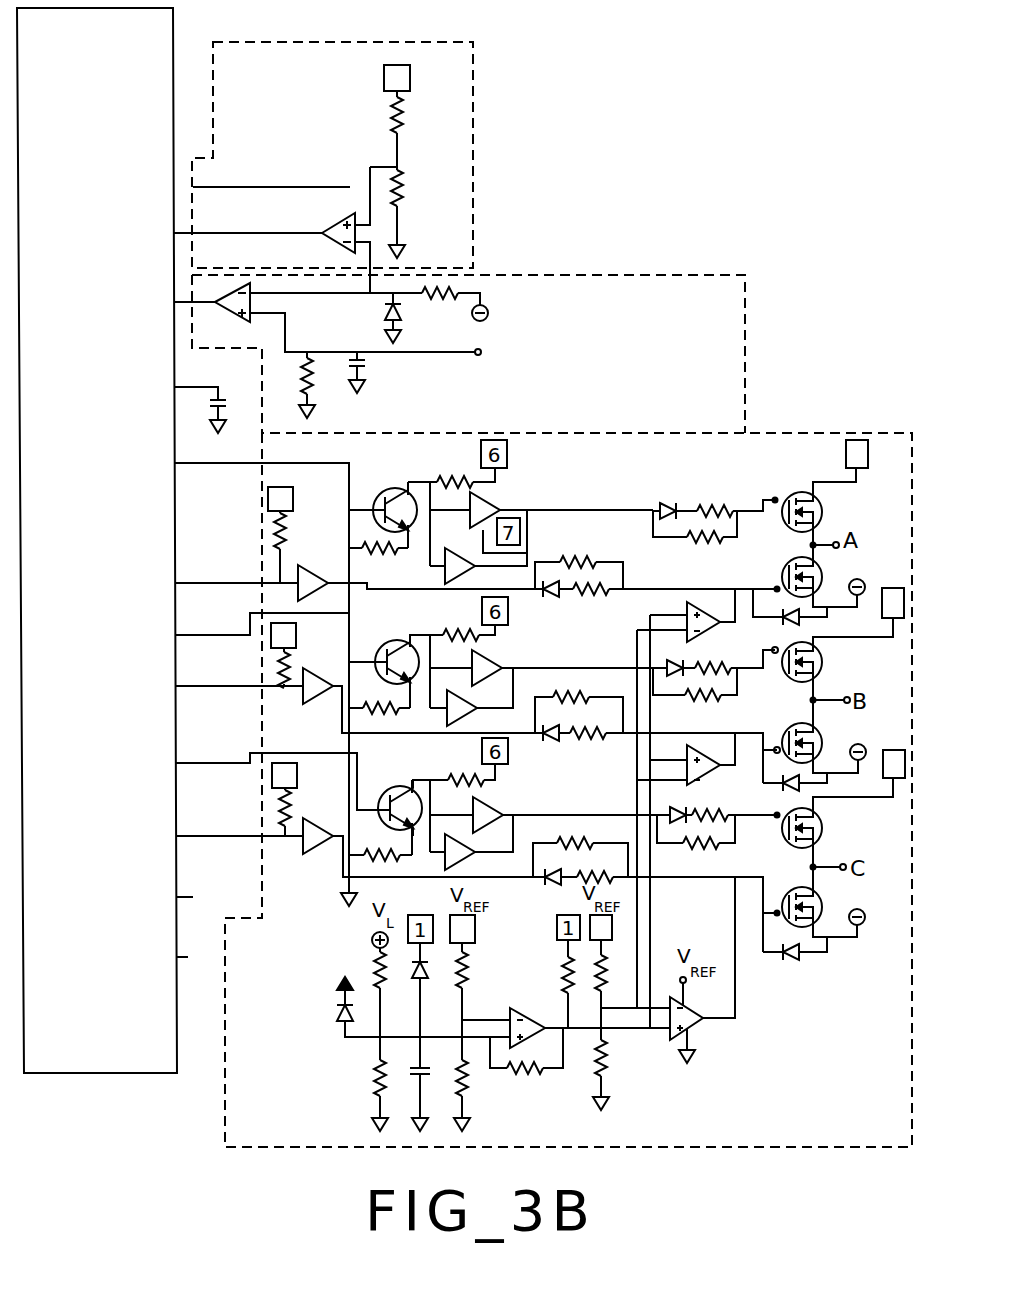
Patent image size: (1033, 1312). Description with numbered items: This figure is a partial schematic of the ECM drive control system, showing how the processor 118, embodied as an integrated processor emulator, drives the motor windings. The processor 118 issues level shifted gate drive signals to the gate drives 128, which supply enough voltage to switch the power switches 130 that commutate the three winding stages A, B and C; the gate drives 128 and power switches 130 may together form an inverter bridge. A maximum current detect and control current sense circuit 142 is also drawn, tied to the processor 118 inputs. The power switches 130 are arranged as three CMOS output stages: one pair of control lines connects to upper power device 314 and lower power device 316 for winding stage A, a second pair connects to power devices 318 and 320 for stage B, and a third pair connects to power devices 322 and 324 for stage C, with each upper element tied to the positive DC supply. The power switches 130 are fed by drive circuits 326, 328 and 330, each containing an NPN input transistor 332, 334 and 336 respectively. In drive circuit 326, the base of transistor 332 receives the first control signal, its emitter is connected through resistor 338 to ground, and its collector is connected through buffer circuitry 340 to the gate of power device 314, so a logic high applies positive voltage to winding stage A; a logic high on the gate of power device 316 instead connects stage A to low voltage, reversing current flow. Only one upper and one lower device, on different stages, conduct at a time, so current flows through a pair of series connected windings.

The processor 118 is at (90, 609).
The maximum current detect and control current sense circuit 142 is at (494, 267).
The gate drives 128 is at (755, 426).
The power switches 130 is at (856, 430).
The upper power device 314 is at (787, 496).
The lower power device 316 is at (786, 568).
The power device 318 is at (788, 645).
The power device 320 is at (793, 725).
The power device 322 is at (788, 812).
The power device 324 is at (792, 880).
The drive circuit 326 is at (256, 548).
The drive circuit 328 is at (258, 678).
The drive circuit 330 is at (258, 819).
The NPN input transistor 332 is at (392, 489).
The NPN input transistor 334 is at (394, 641).
The NPN input transistor 336 is at (398, 787).
The resistor 338 is at (362, 546).
The buffer circuitry 340 is at (656, 557).